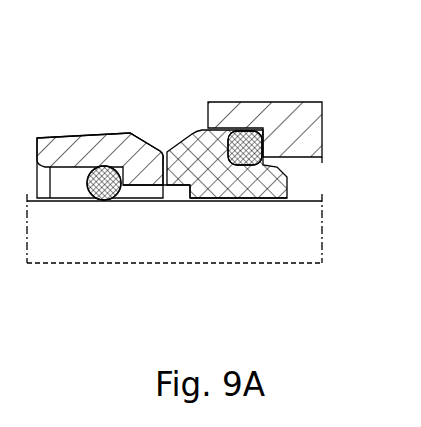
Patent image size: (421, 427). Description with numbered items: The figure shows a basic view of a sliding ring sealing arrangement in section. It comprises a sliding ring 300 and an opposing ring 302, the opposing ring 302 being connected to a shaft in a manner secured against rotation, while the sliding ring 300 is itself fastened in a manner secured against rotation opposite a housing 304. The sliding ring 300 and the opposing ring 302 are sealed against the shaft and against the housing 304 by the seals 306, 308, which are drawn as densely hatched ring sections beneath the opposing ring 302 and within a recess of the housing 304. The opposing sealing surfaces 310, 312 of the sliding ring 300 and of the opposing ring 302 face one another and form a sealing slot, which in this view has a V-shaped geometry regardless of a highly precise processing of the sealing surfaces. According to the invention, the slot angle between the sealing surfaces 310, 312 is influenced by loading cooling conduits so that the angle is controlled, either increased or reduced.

The sliding ring 300 is at (192, 133).
The opposing ring 302 is at (72, 138).
The housing 304 is at (302, 112).
The seal 306 is at (85, 201).
The seal 308 is at (266, 148).
The sealing surface 310 is at (190, 187).
The sealing surface 312 is at (141, 187).